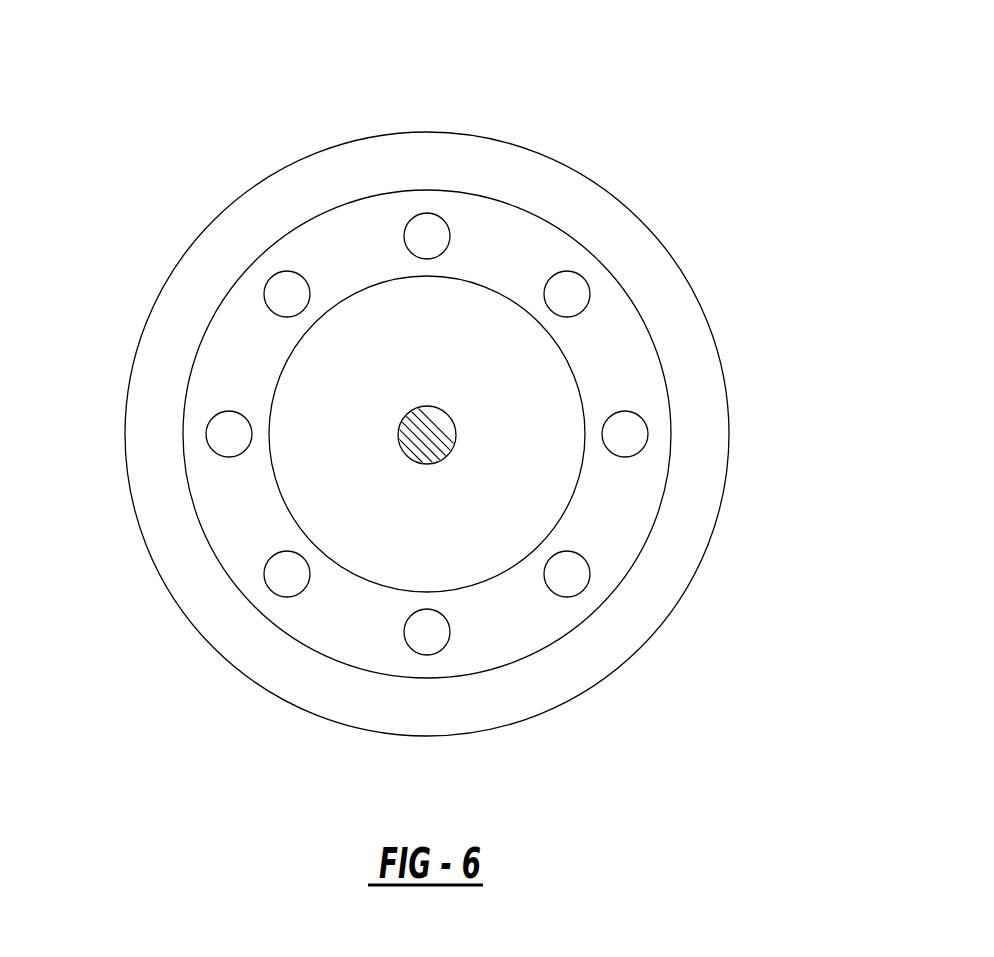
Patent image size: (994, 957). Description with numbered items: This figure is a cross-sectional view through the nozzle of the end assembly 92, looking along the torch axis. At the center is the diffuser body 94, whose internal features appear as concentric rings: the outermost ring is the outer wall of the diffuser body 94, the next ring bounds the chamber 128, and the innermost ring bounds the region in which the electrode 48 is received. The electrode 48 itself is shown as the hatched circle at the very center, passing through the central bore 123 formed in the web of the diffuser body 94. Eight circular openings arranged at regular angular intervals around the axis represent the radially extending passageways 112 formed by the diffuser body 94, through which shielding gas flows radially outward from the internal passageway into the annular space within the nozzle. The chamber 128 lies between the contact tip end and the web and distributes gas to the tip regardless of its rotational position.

The electrode 48 is at (445, 407).
The end assembly 92 is at (722, 508).
The diffuser body 94 is at (467, 540).
The radially extending passageways 112 is at (430, 223).
The central bore 123 is at (398, 433).
The chamber 128 is at (537, 217).